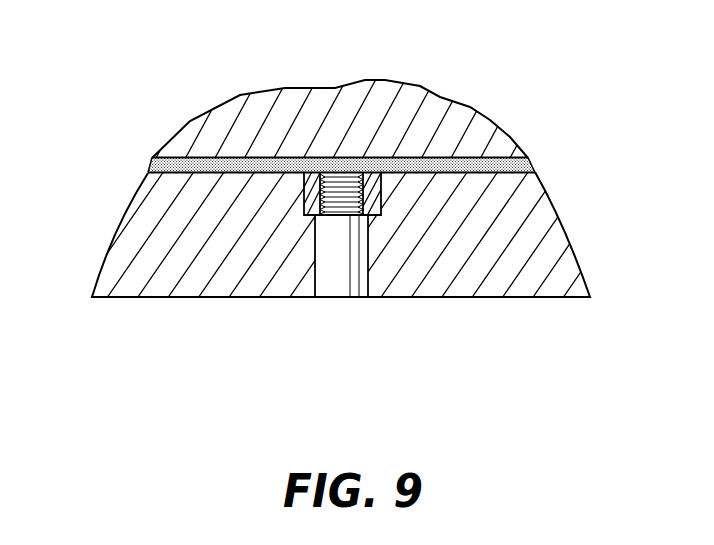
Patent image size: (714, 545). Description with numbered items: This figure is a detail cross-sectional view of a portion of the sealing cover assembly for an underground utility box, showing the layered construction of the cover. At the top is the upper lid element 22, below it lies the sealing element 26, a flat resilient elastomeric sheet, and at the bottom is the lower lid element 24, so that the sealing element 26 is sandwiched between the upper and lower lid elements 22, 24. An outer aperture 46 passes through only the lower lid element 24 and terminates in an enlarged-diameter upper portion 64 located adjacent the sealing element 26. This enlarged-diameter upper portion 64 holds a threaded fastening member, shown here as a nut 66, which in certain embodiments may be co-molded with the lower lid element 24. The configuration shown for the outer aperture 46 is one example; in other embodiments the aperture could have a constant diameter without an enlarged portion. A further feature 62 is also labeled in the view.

The upper lid element 22 is at (192, 128).
The sealing element 26 is at (153, 158).
The lower lid element 24 is at (133, 221).
The enlarged-diameter upper portion 64 is at (295, 178).
The nut 66 is at (371, 176).
The outer aperture 46 is at (340, 297).
The passage 62 is at (378, 254).